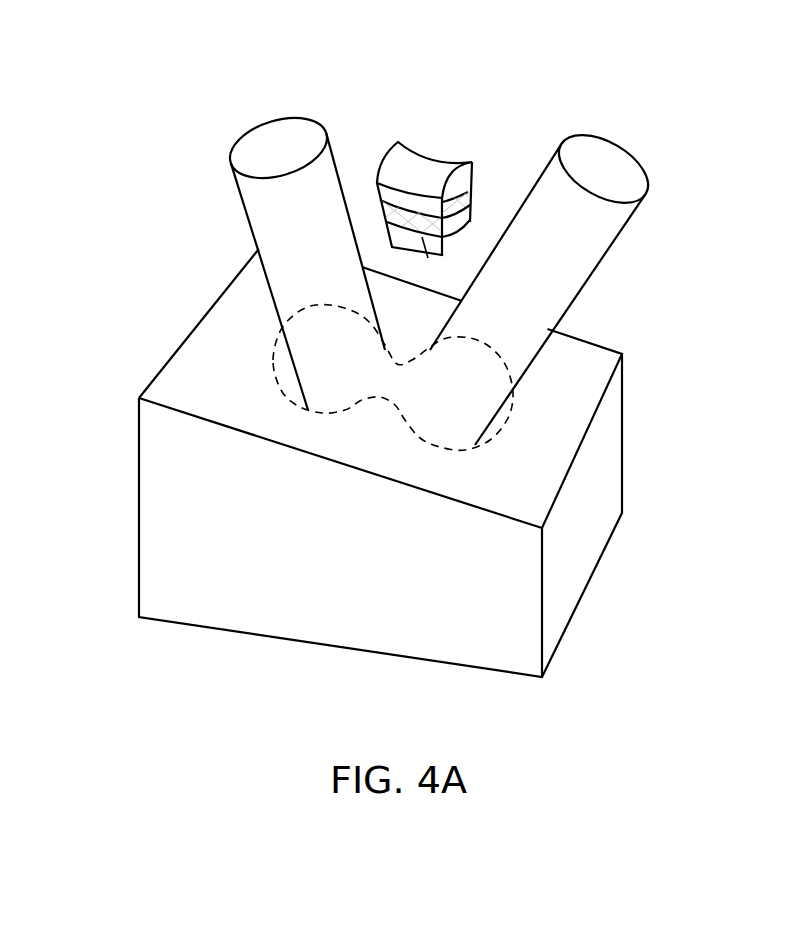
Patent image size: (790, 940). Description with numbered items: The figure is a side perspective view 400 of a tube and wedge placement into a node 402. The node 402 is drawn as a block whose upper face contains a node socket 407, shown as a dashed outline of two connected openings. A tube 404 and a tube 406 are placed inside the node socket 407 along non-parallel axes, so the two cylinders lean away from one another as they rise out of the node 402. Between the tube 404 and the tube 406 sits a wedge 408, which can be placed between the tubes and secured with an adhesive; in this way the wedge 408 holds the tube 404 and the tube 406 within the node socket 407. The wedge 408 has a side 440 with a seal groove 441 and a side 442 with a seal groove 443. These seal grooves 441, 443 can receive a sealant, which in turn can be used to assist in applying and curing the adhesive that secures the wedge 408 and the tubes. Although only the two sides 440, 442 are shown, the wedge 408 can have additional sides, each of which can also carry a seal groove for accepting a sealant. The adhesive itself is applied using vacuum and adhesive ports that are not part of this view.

The side perspective view 400 is at (211, 117).
The node 402 is at (177, 390).
The tube 404 is at (260, 207).
The tube 406 is at (590, 230).
The node socket 407 is at (273, 360).
The wedge 408 is at (447, 160).
The side 440 is at (428, 258).
The seal groove 441 is at (393, 210).
The side 442 is at (472, 218).
The seal groove 443 is at (462, 216).